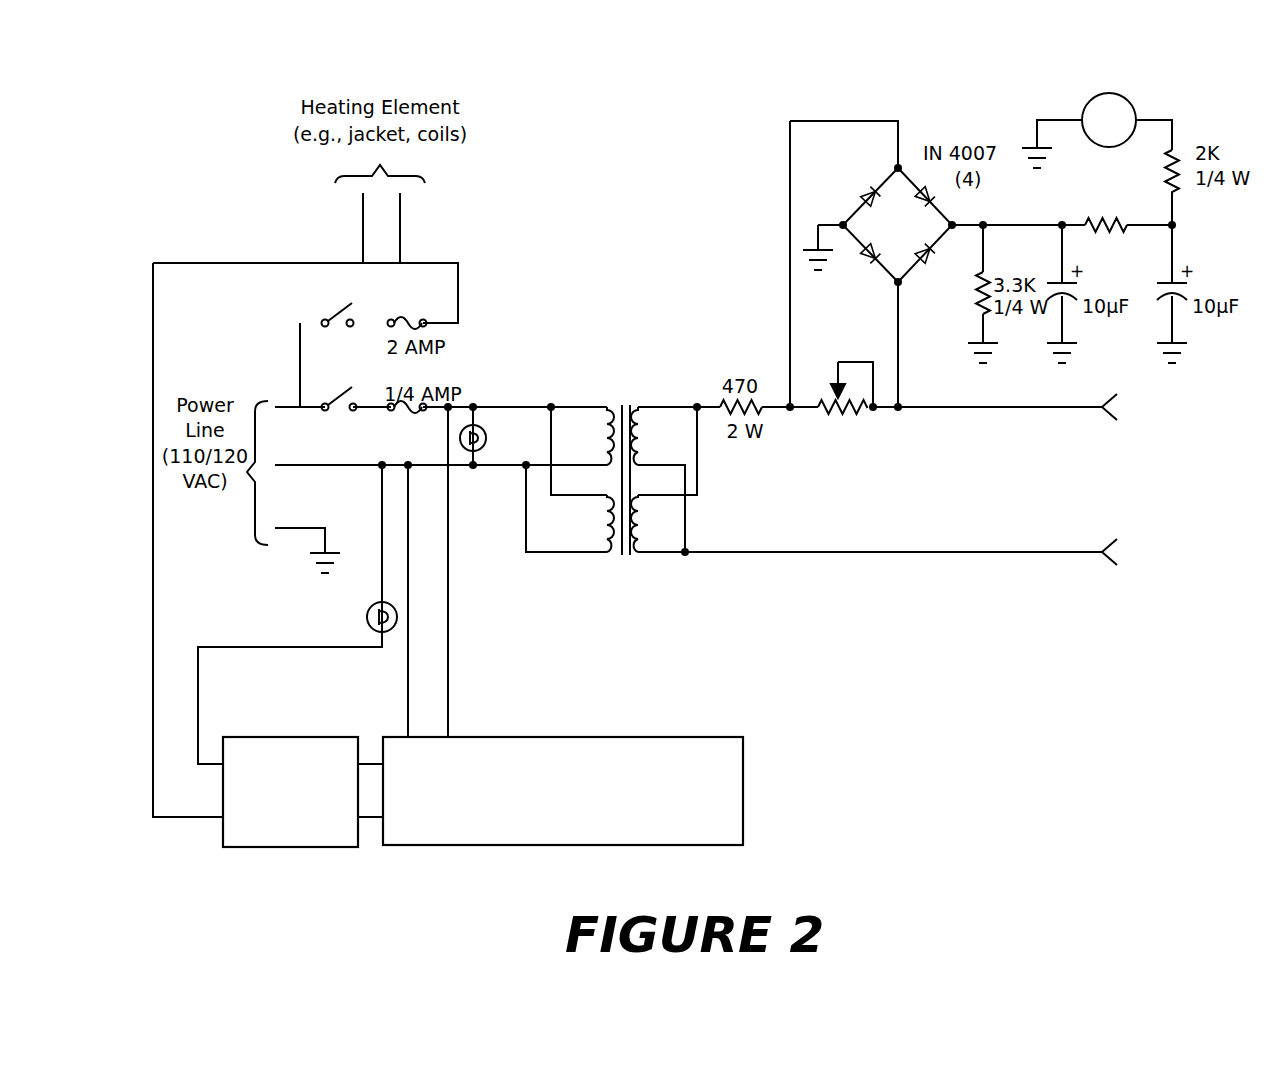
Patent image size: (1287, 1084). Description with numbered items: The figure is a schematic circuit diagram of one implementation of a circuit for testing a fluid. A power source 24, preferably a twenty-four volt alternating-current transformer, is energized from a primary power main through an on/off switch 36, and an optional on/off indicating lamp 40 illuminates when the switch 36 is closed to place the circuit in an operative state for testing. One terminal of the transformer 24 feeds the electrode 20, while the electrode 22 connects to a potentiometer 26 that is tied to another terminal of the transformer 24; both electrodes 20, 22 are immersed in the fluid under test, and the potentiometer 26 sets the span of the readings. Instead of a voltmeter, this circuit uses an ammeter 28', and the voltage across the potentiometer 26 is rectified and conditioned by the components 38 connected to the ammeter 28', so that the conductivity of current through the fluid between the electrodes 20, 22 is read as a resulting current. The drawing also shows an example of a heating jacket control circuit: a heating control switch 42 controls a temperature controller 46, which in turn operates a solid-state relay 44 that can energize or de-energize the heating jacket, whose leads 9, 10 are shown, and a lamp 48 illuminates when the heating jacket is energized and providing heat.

The heating element lead 9 is at (345, 228).
The heating element lead 10 is at (420, 228).
The heating control switch 42 is at (326, 305).
The on/off switch 36 is at (320, 390).
The on/off indicating lamp 40 is at (497, 433).
The lamp 48 is at (369, 609).
The power source 24 is at (611, 367).
The components 38 is at (758, 230).
The ammeter 28' is at (1127, 142).
The potentiometer 26 is at (842, 412).
The electrode 20 is at (1156, 407).
The electrode 22 is at (1156, 552).
The solid-state relay 44 is at (258, 737).
The temperature controller 46 is at (518, 737).